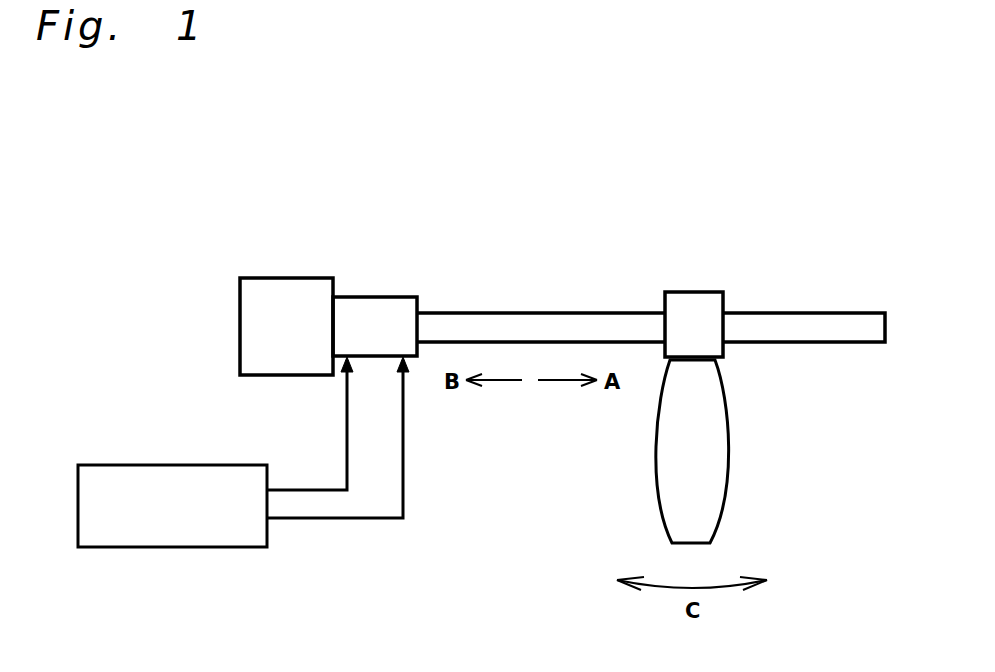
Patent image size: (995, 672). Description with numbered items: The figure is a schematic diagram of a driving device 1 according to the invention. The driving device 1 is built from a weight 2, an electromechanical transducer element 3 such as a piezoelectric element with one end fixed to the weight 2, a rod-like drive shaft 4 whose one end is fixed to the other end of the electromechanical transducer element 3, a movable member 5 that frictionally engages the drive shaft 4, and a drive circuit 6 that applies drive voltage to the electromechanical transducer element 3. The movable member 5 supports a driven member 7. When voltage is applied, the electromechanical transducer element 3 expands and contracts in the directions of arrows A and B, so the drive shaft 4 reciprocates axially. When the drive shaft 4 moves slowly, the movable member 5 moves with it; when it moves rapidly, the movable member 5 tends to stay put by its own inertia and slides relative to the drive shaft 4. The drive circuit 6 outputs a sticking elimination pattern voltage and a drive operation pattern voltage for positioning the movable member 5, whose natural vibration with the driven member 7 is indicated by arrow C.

The driving device 1 is at (451, 170).
The weight 2 is at (282, 278).
The electromechanical transducer element 3 is at (372, 297).
The drive shaft 4 is at (505, 313).
The movable member 5 is at (691, 292).
The drive circuit 6 is at (143, 465).
The driven member 7 is at (732, 458).